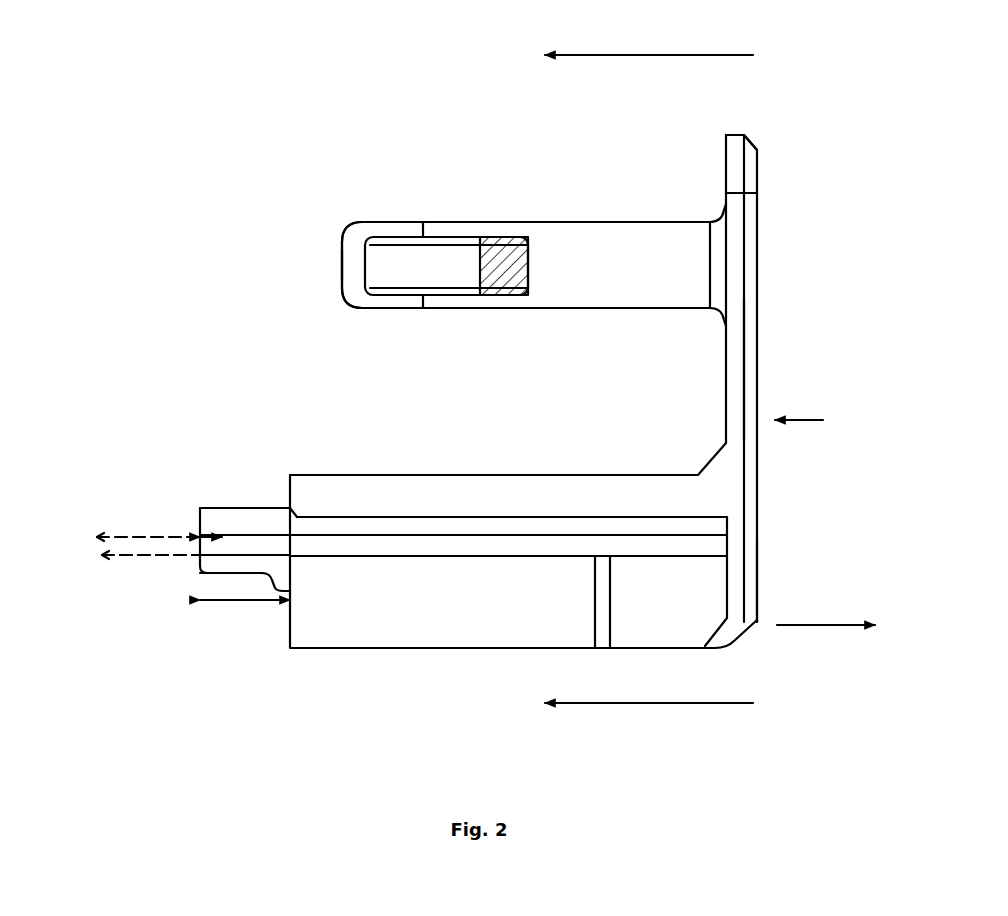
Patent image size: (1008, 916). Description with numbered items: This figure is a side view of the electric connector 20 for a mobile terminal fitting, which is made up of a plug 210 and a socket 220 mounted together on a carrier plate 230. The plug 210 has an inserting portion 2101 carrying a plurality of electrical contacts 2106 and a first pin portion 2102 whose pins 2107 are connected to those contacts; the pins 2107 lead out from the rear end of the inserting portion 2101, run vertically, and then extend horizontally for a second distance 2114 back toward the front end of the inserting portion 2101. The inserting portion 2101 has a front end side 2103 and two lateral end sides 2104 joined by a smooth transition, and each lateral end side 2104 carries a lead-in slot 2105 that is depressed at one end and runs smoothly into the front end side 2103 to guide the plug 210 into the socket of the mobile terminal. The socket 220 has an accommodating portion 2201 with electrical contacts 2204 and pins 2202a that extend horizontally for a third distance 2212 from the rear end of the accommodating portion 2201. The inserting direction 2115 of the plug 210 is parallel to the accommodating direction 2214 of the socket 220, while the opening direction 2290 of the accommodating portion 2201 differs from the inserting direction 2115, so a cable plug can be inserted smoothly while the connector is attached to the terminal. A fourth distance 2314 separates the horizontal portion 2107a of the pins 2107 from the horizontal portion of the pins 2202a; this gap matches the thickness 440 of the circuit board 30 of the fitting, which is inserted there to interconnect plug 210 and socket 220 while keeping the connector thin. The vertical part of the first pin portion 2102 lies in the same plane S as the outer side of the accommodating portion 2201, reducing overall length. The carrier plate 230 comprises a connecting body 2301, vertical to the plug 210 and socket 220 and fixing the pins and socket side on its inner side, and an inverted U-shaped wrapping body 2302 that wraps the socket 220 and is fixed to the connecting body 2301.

The electric connector 20 is at (148, 47).
The plug 210 is at (500, 220).
The inserting portion 2101 is at (350, 227).
The first pin portion 2102 is at (718, 215).
The front end side 2103 is at (342, 272).
The lateral end sides 2104 is at (613, 268).
The lead-in slot 2105 is at (413, 270).
The electrical contacts 2106 is at (422, 308).
The pins 2107 is at (757, 263).
The portion of the pin 2107a is at (223, 507).
The inserting direction 2115 is at (720, 55).
The connecting body 2301 is at (735, 135).
The wrapping body 2302 is at (618, 475).
The carrier plate 230 is at (757, 365).
The plane S is at (809, 420).
The electrical contacts 2204 is at (757, 522).
The accommodating portion 2201 is at (757, 585).
The pins 2202a is at (208, 567).
The fourth distance 2314 is at (220, 555).
The second distance 2114 is at (290, 600).
The third distance 2212 is at (217, 612).
The thickness 440 is at (100, 537).
The circuit board 30 is at (152, 557).
The socket 220 is at (703, 610).
The accommodating direction 2214 is at (722, 705).
The opening direction 2290 is at (805, 625).